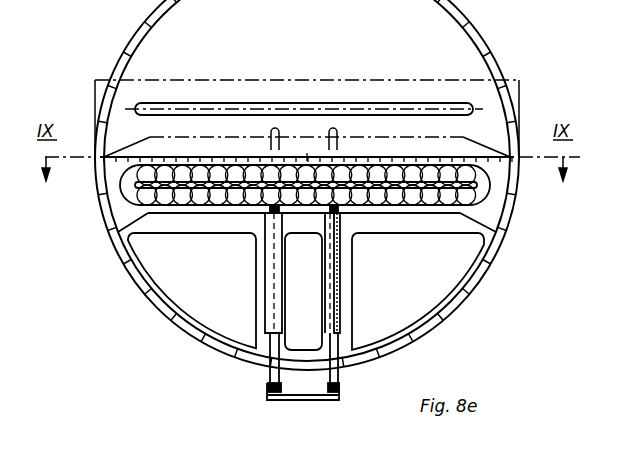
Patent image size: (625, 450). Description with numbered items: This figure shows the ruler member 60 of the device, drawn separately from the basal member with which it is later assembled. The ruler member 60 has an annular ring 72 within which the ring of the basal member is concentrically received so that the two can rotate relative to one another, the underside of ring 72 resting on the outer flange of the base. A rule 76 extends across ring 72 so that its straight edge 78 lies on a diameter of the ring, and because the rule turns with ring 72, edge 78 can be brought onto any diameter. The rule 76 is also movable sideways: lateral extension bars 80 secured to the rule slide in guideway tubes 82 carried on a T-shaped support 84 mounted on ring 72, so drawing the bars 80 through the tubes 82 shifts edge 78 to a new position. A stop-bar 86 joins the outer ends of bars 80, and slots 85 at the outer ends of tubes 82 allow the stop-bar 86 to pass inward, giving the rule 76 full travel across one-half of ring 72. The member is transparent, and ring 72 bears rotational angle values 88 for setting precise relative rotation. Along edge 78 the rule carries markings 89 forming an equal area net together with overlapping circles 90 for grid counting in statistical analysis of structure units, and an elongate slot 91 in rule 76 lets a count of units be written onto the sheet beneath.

The ruler member 60 is at (101, 254).
The annular ring 72 is at (494, 62).
The rule 76 is at (383, 127).
The edge of the rule 78 is at (283, 80).
The lateral extension bars 80 is at (328, 393).
The guideway tubes 82 is at (263, 283).
The T-shaped support 84 is at (235, 223).
The slots 85 is at (328, 298).
The stop-bar 86 is at (340, 398).
The rotational angle values 88 is at (492, 272).
The markings 89 is at (425, 160).
The overlapping circles 90 is at (471, 202).
The elongate slot 91 is at (415, 190).